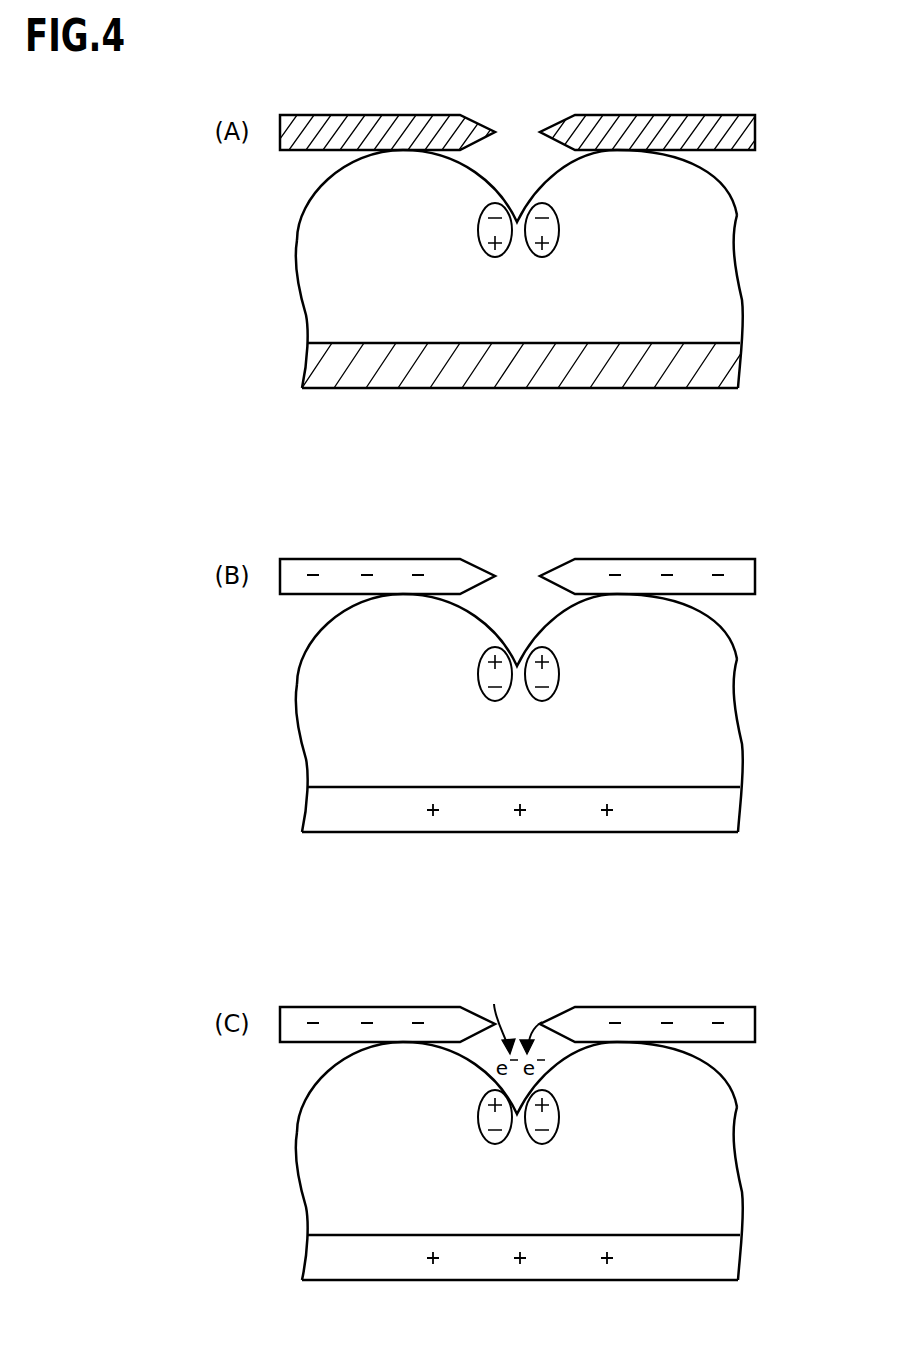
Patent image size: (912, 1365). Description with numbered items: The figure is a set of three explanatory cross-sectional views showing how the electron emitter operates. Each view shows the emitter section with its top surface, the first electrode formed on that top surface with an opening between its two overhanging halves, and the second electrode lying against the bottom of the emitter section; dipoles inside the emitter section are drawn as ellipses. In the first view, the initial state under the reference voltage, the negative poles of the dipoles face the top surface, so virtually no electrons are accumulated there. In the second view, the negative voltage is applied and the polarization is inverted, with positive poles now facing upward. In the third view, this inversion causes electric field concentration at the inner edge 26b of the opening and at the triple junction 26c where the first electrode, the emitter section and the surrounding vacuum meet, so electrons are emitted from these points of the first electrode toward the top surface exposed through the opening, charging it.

The inner edge 26b is at (491, 999).
The triple junction 26c is at (588, 1009).